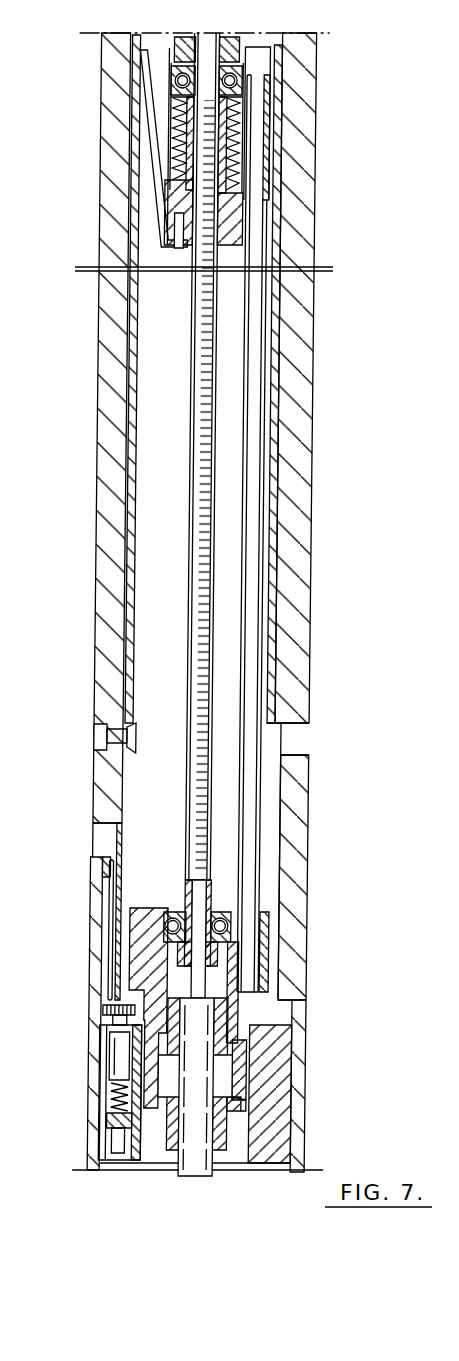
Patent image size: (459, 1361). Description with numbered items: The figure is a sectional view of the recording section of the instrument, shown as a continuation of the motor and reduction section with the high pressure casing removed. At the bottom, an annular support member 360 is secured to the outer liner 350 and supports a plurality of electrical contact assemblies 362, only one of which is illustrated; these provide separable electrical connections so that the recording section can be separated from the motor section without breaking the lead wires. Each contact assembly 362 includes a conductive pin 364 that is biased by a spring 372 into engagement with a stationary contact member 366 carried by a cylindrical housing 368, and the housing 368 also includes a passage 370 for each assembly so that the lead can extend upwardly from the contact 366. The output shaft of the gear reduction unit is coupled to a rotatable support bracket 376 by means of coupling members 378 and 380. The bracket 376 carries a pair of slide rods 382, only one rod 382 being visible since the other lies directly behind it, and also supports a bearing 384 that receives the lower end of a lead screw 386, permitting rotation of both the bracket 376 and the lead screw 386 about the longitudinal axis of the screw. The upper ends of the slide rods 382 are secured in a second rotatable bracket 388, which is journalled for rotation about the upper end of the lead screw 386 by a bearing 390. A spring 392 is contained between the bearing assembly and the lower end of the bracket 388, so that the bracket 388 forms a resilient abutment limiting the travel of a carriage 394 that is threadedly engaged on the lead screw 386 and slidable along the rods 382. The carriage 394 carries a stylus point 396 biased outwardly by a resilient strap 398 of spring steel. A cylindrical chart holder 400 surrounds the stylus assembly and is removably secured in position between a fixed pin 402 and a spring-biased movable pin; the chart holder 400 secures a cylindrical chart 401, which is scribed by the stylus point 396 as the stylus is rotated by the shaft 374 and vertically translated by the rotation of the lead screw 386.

The outer liner 350 is at (313, 1142).
The annular support member 360 is at (294, 1072).
The electrical contact assembly 362 is at (96, 1100).
The conductive pin 364 is at (127, 1042).
The stationary contact member 366 is at (116, 1010).
The cylindrical housing 368 is at (109, 178).
The passage 370 is at (121, 870).
The spring 372 is at (130, 1080).
The shaft 374 is at (206, 1170).
The rotatable support bracket 376 is at (146, 947).
The coupling member 378 is at (257, 1098).
The coupling member 380 is at (257, 1050).
The slide rod 382 is at (262, 660).
The bearing 384 is at (173, 920).
The lead screw 386 is at (214, 40).
The second rotatable bracket 388 is at (272, 157).
The bearing 390 is at (232, 81).
The spring 392 is at (241, 128).
The carriage 394 is at (238, 222).
The stylus point 396 is at (103, 58).
The resilient strap 398 is at (151, 130).
The cylindrical chart holder 400 is at (134, 380).
The cylindrical chart 401 is at (140, 467).
The fixed pin 402 is at (118, 736).